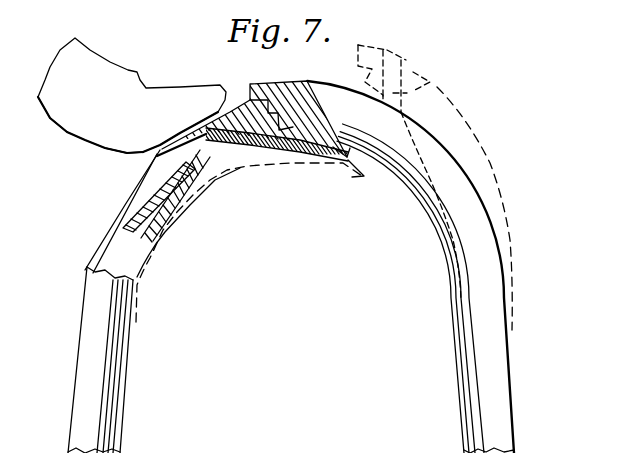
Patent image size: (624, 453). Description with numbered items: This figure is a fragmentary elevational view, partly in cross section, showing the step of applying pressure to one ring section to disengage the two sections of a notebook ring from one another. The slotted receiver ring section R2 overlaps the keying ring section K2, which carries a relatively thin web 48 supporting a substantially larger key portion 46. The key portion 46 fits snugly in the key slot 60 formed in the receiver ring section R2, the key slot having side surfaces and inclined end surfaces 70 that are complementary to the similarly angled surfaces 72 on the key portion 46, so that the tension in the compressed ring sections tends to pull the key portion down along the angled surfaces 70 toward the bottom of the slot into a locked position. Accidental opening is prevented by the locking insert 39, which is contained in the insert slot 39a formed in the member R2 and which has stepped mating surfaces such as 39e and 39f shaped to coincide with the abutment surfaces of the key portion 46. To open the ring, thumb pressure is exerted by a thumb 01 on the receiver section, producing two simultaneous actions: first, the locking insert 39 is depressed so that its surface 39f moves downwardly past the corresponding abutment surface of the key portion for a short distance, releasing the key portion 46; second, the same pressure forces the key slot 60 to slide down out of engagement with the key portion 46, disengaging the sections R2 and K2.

The tool member 01 is at (97, 64).
The locking insert 39 is at (200, 175).
The insert slot 39a is at (123, 227).
The stepped mating surface 39e is at (237, 108).
The stepped mating surface 39f is at (282, 146).
The key portion 46 is at (268, 92).
The web 48 is at (444, 80).
The key slot 60 is at (246, 101).
The inclined end surfaces 70 is at (289, 146).
The angled surfaces 72 is at (402, 60).
The slotted receiver ring section R2 is at (133, 332).
The keying ring section K2 is at (462, 302).